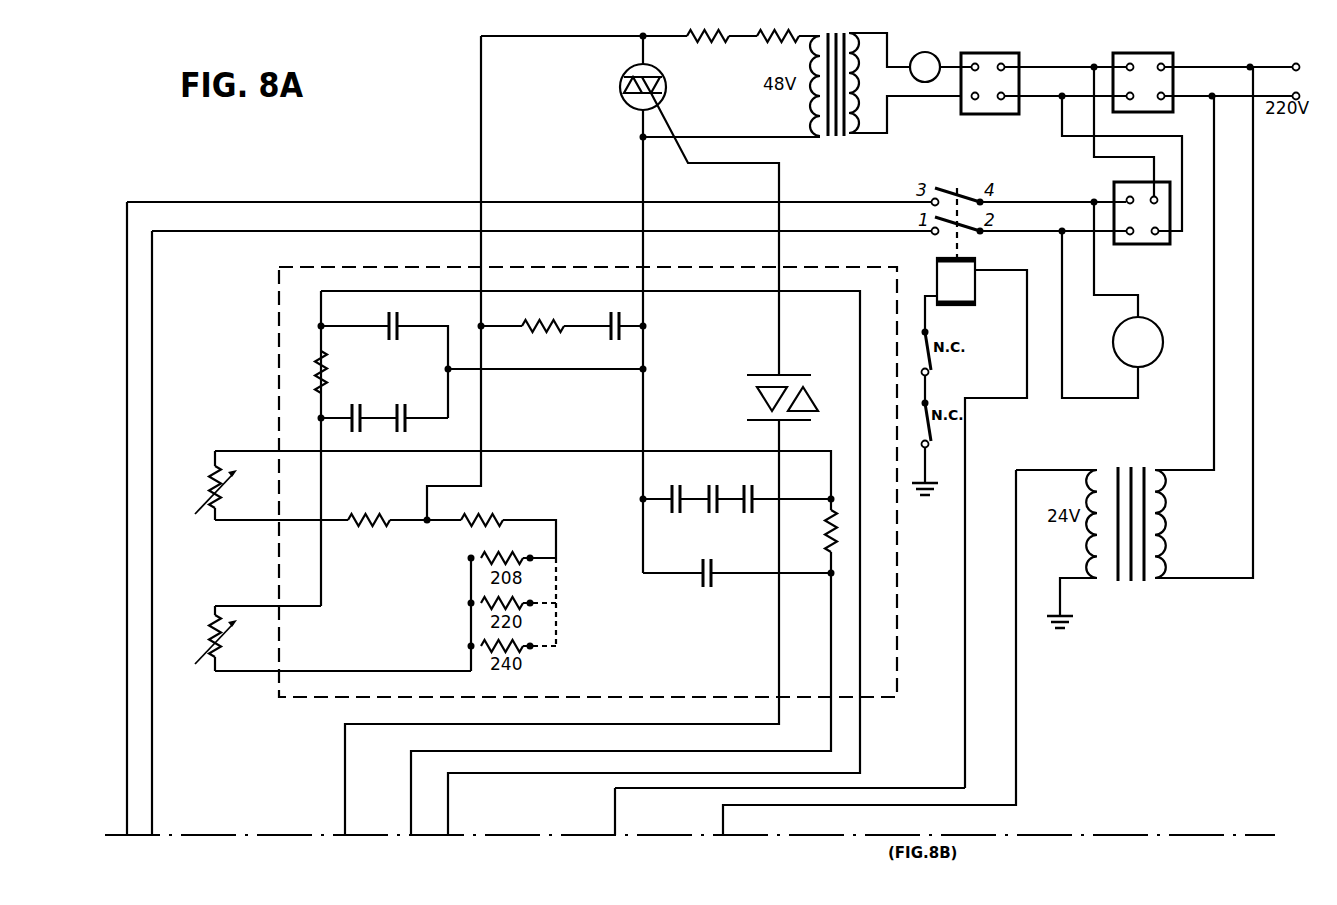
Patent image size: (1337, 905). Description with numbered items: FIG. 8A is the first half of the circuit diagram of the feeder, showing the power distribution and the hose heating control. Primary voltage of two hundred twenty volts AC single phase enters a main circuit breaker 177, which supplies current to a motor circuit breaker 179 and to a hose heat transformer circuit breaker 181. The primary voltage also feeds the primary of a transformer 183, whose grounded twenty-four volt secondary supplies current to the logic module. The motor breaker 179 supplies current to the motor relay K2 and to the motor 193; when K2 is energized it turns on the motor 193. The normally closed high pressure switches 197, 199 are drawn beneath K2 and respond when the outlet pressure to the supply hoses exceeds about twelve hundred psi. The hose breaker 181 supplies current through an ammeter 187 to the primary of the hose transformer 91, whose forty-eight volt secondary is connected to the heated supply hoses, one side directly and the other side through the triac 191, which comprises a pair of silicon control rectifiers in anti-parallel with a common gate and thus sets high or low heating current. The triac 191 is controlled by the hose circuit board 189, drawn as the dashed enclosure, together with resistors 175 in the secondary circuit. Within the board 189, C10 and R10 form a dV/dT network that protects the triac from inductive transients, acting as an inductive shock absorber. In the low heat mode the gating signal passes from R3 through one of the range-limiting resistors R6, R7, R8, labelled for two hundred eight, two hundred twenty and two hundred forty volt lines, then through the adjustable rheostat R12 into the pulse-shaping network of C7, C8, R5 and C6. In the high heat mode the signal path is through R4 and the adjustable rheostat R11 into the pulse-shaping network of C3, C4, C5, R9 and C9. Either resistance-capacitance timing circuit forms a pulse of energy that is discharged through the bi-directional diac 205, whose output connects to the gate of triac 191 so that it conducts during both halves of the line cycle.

The resistor 175 is at (792, 30).
The triac 191 is at (666, 89).
The hose transformer 91 is at (836, 140).
The ammeter 187 is at (921, 51).
The hose heat transformer circuit breaker 181 is at (985, 53).
The main circuit breaker 177 is at (1147, 53).
The motor circuit breaker 179 is at (1145, 248).
The motor relay K2 is at (975, 280).
The motor 193 is at (1177, 355).
The high pressure switch 199 is at (930, 360).
The high pressure switch 197 is at (931, 432).
The hose circuit board 189 is at (276, 351).
The diac 205 is at (770, 376).
The transformer 183 is at (1143, 583).
The resistor R5 is at (333, 372).
The capacitor C6 is at (405, 322).
The capacitor C7 is at (364, 412).
The capacitor C8 is at (409, 412).
The resistor R10 is at (543, 315).
The capacitor C10 is at (601, 319).
The adjustable rheostat R11 is at (206, 490).
The adjustable rheostat R12 is at (206, 639).
The resistor R4 is at (369, 510).
The resistor R3 is at (482, 510).
The range-limiting resistor R6 is at (482, 560).
The range-limiting resistor R7 is at (482, 605).
The range-limiting resistor R8 is at (482, 648).
The capacitor C3 is at (676, 490).
The capacitor C4 is at (713, 490).
The capacitor C5 is at (749, 490).
The resistor R9 is at (820, 531).
The capacitor C9 is at (719, 577).